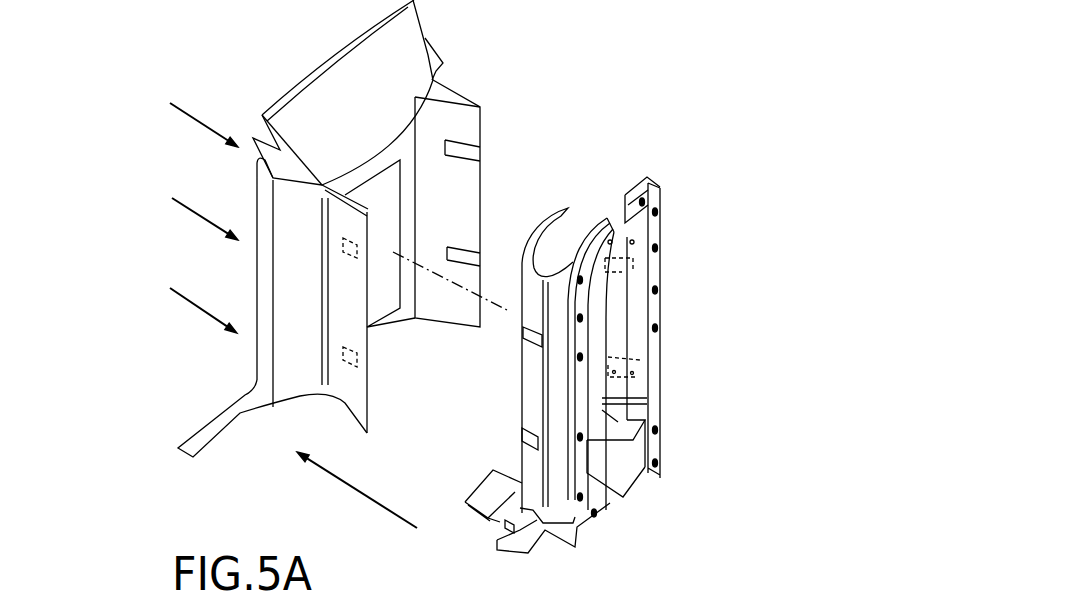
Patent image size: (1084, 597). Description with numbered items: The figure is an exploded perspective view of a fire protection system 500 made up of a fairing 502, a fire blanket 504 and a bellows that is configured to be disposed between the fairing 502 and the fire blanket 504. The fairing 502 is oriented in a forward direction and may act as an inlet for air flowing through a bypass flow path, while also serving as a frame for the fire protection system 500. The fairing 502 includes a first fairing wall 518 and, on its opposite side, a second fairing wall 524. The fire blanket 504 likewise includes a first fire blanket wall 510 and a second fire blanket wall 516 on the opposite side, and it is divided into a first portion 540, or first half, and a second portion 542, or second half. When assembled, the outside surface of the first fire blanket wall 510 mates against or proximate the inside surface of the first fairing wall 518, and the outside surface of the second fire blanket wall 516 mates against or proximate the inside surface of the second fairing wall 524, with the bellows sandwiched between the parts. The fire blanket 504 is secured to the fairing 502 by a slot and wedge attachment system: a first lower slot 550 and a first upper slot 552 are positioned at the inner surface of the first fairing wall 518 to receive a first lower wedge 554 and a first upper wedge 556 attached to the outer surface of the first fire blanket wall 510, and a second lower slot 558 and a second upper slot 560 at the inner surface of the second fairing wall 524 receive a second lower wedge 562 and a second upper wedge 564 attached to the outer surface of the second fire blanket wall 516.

The fire protection system 500 is at (210, 73).
The fairing 502 is at (413, 48).
The fire blanket 504 is at (653, 195).
The first fire blanket wall 510 is at (532, 363).
The second fire blanket wall 516 is at (632, 313).
The first fairing wall 518 is at (353, 400).
The second fairing wall 524 is at (470, 115).
The first portion 540 is at (587, 523).
The second portion 542 is at (650, 462).
The first lower slot 550 is at (367, 364).
The first upper slot 552 is at (360, 253).
The first lower wedge 554 is at (523, 435).
The first upper wedge 556 is at (532, 328).
The second lower slot 558 is at (477, 257).
The second upper slot 560 is at (470, 150).
The second lower wedge 562 is at (625, 372).
The second upper wedge 564 is at (627, 265).